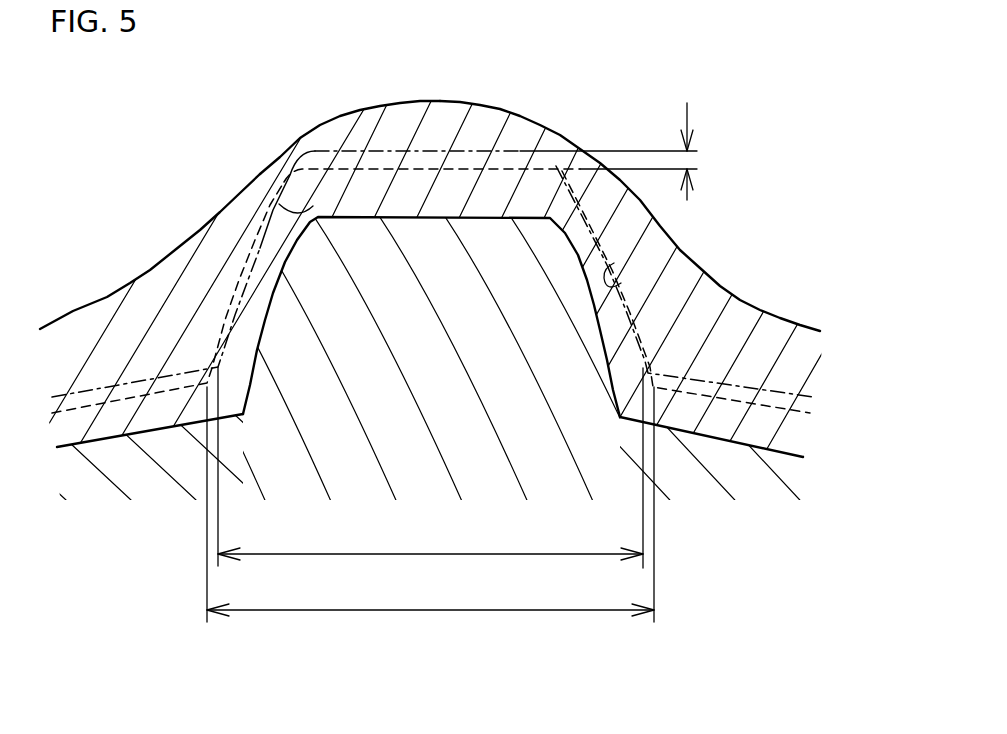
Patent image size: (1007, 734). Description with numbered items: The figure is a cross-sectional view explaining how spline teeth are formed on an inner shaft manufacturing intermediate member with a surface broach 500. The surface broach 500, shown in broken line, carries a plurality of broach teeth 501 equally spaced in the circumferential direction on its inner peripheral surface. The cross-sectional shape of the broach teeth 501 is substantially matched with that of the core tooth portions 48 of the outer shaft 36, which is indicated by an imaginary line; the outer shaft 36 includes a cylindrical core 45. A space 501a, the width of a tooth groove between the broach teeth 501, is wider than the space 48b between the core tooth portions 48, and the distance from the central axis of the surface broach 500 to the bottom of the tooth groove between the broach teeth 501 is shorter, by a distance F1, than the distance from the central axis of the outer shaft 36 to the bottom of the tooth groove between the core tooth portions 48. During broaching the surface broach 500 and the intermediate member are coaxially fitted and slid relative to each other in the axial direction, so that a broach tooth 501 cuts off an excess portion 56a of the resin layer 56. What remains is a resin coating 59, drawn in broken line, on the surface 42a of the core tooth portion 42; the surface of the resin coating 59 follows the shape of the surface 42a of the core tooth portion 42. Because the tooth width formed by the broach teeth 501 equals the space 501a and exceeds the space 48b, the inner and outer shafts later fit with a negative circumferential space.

The outer shaft 36 is at (390, 150).
The core tooth portion 42 is at (520, 217).
The surface of the core tooth portion 42a is at (572, 257).
The core 45 is at (448, 163).
The core tooth portion 48 is at (314, 205).
The space 48b is at (430, 467).
The resin layer 56 is at (120, 297).
The excess portion 56a is at (206, 262).
The resin coating 59 is at (477, 167).
The surface broach 500 is at (429, 172).
The broach teeth 501 is at (124, 398).
The space 501a is at (430, 504).
The distance F1 is at (624, 151).